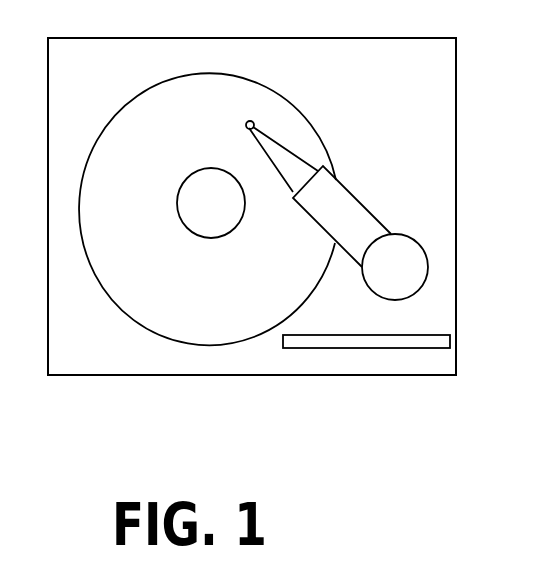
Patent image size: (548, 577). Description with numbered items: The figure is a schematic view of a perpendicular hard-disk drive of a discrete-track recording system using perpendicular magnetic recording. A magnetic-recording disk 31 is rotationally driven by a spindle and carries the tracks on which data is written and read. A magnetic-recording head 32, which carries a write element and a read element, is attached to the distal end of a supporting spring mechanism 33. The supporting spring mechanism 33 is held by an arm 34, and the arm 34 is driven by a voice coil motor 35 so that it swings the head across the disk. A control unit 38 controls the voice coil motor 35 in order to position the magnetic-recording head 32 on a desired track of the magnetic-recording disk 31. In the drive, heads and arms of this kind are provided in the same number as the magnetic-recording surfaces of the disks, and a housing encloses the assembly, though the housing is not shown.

The magnetic-recording disk 31 is at (233, 90).
The magnetic-recording head 32 is at (254, 121).
The supporting spring mechanism 33 is at (290, 157).
The arm 34 is at (342, 214).
The voice coil motor 35 is at (398, 250).
The control unit 38 is at (441, 341).